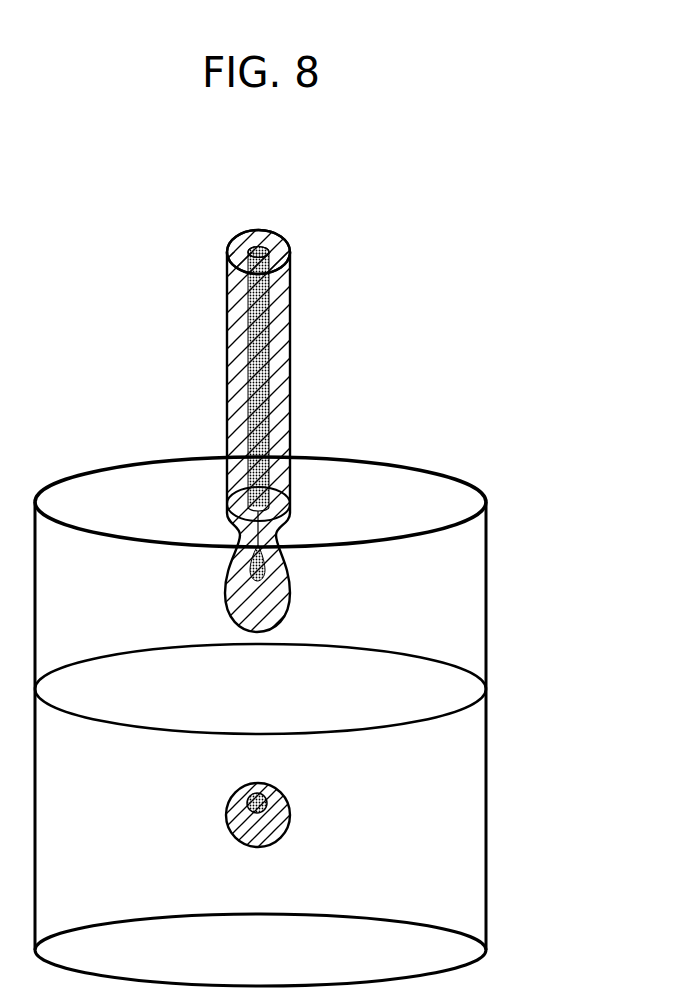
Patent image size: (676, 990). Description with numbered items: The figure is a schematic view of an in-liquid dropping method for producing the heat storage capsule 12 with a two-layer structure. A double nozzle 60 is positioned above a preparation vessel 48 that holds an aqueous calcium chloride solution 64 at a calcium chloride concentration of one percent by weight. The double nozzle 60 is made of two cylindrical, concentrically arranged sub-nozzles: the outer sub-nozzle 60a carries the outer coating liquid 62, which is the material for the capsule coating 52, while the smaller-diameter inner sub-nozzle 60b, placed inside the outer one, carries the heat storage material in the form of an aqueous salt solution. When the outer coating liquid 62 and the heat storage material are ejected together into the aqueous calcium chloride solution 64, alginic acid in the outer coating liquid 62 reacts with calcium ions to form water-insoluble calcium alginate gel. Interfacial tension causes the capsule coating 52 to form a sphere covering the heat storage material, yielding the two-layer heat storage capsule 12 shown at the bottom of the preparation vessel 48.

The heat storage capsule 12 is at (202, 800).
The preparation vessel 48 is at (486, 606).
The capsule coating 52 is at (268, 786).
The double nozzle 60 is at (340, 175).
The sub-nozzle 60a is at (257, 234).
The sub-nozzle 60b is at (265, 240).
The outer coating liquid 62 is at (242, 334).
The aqueous calcium chloride solution 64 is at (450, 765).